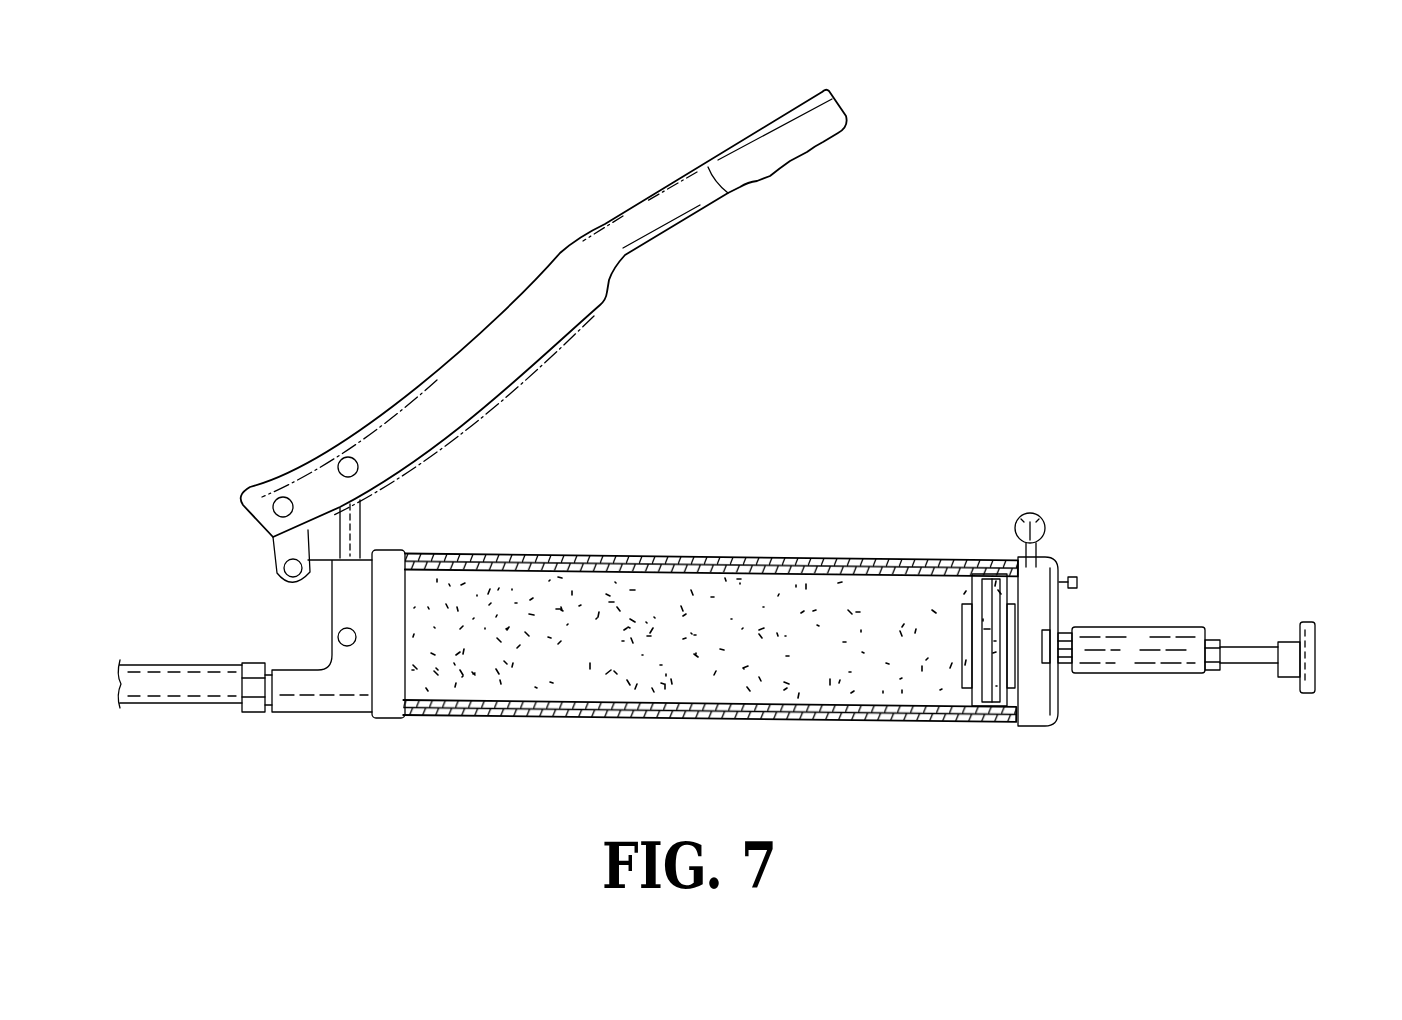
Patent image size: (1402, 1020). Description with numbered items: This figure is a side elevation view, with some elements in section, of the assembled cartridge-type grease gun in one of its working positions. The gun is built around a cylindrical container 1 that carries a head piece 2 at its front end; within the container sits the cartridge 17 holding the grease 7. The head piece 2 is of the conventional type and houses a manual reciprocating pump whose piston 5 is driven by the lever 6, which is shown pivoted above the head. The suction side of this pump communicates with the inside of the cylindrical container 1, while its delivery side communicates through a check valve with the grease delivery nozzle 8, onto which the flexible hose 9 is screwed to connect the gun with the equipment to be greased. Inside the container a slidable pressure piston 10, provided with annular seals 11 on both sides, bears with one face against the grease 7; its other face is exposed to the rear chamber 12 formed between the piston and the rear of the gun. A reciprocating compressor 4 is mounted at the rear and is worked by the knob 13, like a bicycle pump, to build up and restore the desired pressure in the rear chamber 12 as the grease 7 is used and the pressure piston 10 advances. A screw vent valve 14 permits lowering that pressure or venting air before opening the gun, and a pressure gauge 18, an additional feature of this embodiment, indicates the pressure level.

The cylindrical container 1 is at (720, 557).
The head piece 2 is at (340, 712).
The reciprocating compressor 4 is at (1157, 647).
The piston 5 is at (362, 518).
The lever 6 is at (703, 194).
The grease 7 is at (683, 653).
The grease delivery nozzle 8 is at (270, 712).
The flexible hose 9 is at (171, 683).
The pressure piston 10 is at (985, 684).
The annular seals 11 is at (1000, 590).
The rear chamber 12 is at (1037, 708).
The knob 13 is at (1317, 647).
The screw vent valve 14 is at (1078, 583).
The cartridge 17 is at (570, 555).
The pressure gauge 18 is at (1037, 517).